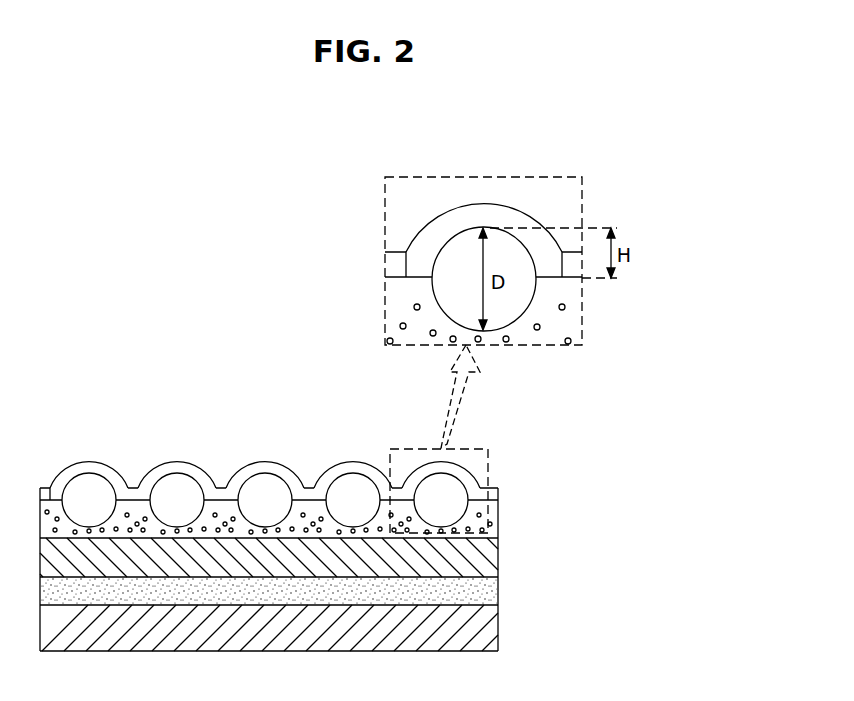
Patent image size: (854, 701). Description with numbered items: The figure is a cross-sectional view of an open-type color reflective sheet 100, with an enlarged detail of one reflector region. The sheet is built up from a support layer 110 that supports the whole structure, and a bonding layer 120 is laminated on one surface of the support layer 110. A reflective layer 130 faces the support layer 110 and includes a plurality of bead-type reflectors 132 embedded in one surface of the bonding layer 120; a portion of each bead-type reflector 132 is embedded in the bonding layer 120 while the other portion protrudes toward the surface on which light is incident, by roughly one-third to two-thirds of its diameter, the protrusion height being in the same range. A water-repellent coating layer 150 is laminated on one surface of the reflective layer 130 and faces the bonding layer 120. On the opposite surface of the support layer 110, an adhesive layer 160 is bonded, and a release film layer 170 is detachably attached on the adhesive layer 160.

The open-type color reflective sheet 100 is at (250, 336).
The support layer 110 is at (488, 560).
The bonding layer 120 is at (498, 518).
The reflective layer 130 is at (498, 493).
The bead-type reflector 132 is at (176, 472).
The water-repellent coating layer 150 is at (263, 465).
The adhesive layer 160 is at (488, 592).
The release film layer 170 is at (488, 632).